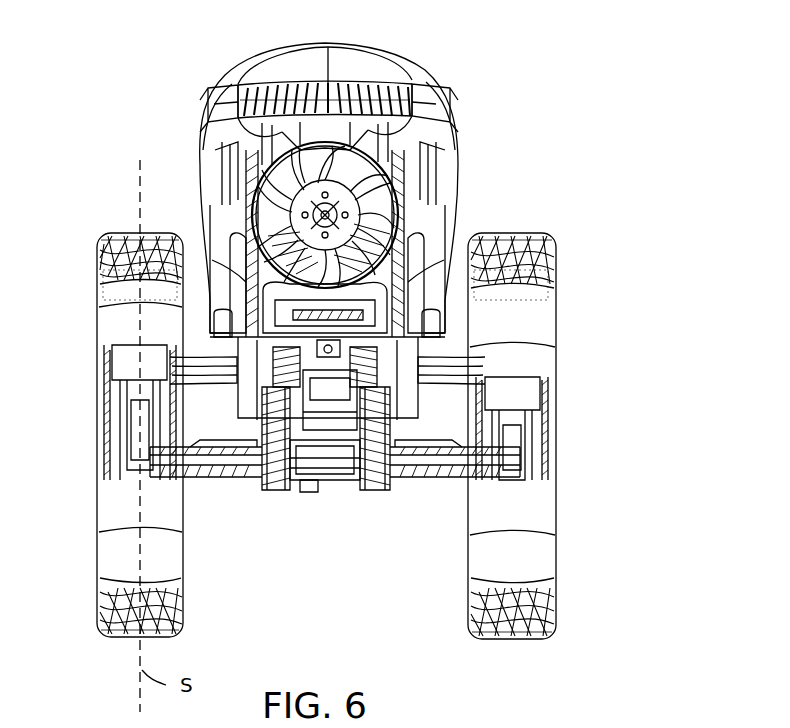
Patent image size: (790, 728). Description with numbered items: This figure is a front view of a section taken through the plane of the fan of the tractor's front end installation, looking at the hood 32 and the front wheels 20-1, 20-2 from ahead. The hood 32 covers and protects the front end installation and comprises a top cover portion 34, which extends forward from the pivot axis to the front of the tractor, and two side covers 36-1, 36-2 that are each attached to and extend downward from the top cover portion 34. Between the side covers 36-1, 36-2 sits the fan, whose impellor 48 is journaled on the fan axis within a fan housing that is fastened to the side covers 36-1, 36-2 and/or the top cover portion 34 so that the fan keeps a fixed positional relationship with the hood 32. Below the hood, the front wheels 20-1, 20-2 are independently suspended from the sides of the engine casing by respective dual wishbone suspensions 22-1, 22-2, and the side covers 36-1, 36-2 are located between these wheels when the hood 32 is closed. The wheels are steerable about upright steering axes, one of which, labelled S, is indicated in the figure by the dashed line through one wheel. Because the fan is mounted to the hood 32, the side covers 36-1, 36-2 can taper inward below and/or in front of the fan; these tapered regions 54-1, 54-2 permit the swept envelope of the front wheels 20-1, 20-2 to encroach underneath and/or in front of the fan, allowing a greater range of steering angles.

The front wheel 20-1 is at (556, 562).
The front wheel 20-2 is at (106, 578).
The dual wishbone suspension 22-1 is at (236, 490).
The dual wishbone suspension 22-2 is at (414, 482).
The hood 32 is at (428, 78).
The top cover portion 34 is at (307, 60).
The side cover 36-1 is at (212, 250).
The side cover 36-2 is at (468, 226).
The impellor 48 is at (250, 183).
The tapered region 54-1 is at (240, 278).
The tapered region 54-2 is at (470, 277).